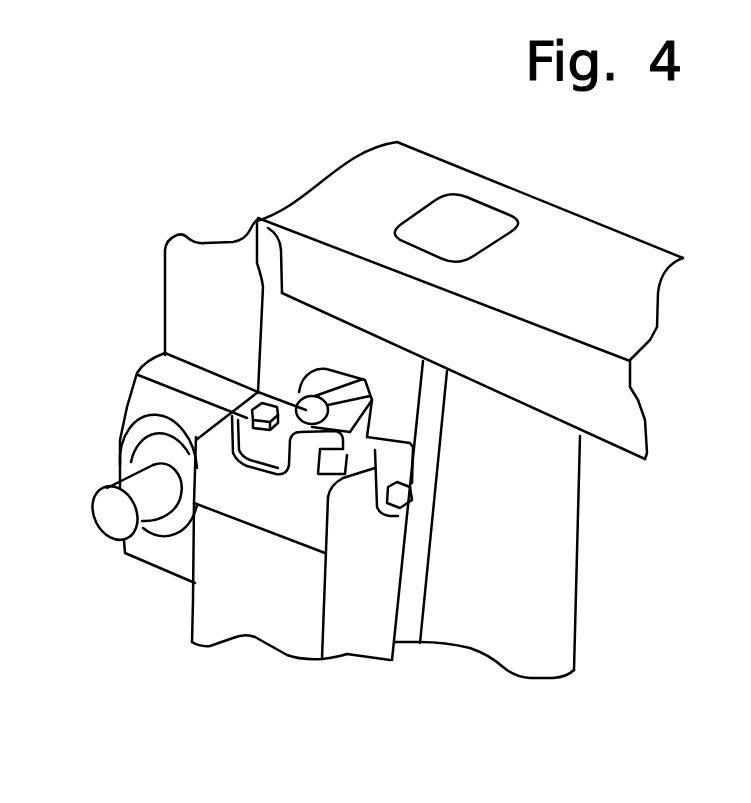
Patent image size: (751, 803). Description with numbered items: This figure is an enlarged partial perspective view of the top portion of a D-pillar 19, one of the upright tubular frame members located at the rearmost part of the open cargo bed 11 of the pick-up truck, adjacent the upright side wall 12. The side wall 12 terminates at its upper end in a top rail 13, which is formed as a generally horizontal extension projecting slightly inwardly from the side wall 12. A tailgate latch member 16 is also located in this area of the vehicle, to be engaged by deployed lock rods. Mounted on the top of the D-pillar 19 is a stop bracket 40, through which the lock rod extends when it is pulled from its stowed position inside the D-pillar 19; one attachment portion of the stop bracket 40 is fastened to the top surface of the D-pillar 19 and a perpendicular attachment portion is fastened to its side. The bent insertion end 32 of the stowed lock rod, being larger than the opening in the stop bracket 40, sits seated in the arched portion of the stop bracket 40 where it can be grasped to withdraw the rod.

The cargo bed 11 is at (266, 165).
The side wall 12 is at (550, 568).
The top rail 13 is at (630, 323).
The tailgate latch member 16 is at (112, 517).
The D-pillar 19 is at (352, 633).
The insertion end 32 is at (305, 390).
The stop bracket 40 is at (385, 448).